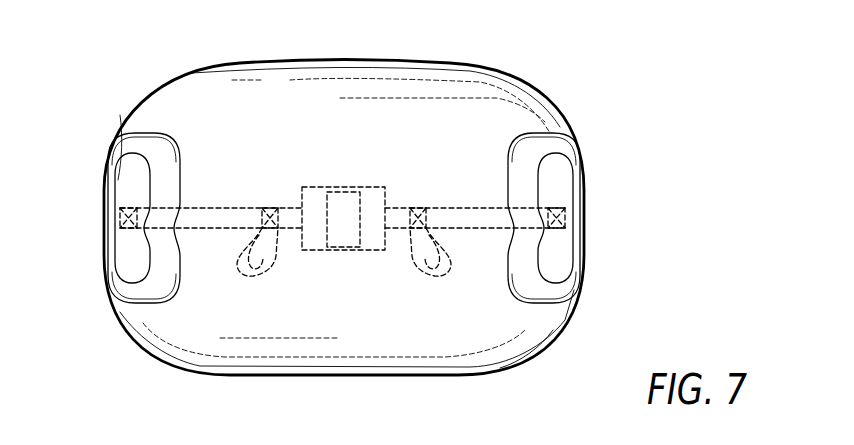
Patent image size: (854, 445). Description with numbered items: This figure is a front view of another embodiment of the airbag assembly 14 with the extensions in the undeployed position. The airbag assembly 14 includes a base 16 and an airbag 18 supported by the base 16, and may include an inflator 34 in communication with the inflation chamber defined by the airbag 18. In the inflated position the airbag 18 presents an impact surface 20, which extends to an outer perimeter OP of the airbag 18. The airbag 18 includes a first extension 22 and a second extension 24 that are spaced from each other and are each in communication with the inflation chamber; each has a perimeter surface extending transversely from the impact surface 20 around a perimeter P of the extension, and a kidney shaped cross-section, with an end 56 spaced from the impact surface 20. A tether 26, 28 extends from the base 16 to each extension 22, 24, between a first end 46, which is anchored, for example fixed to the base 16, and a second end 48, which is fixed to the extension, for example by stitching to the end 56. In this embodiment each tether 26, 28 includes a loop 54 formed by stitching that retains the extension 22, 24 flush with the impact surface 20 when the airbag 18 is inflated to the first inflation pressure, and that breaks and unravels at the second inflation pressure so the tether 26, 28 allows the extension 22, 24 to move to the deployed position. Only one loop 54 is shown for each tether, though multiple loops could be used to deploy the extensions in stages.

The airbag assembly 14 is at (618, 207).
The base 16 is at (343, 187).
The airbag 18 is at (521, 337).
The impact surface 20 is at (376, 316).
The first extension 22 is at (113, 267).
The second extension 24 is at (574, 266).
The tether 26 is at (218, 207).
The tether 28 is at (468, 207).
The inflator 34 is at (342, 250).
The first end 46 is at (302, 228).
The second end 48 is at (133, 229).
The loop 54 is at (247, 276).
The end 56 is at (128, 183).
The perimeter P is at (145, 131).
The outer perimeter OP is at (442, 61).